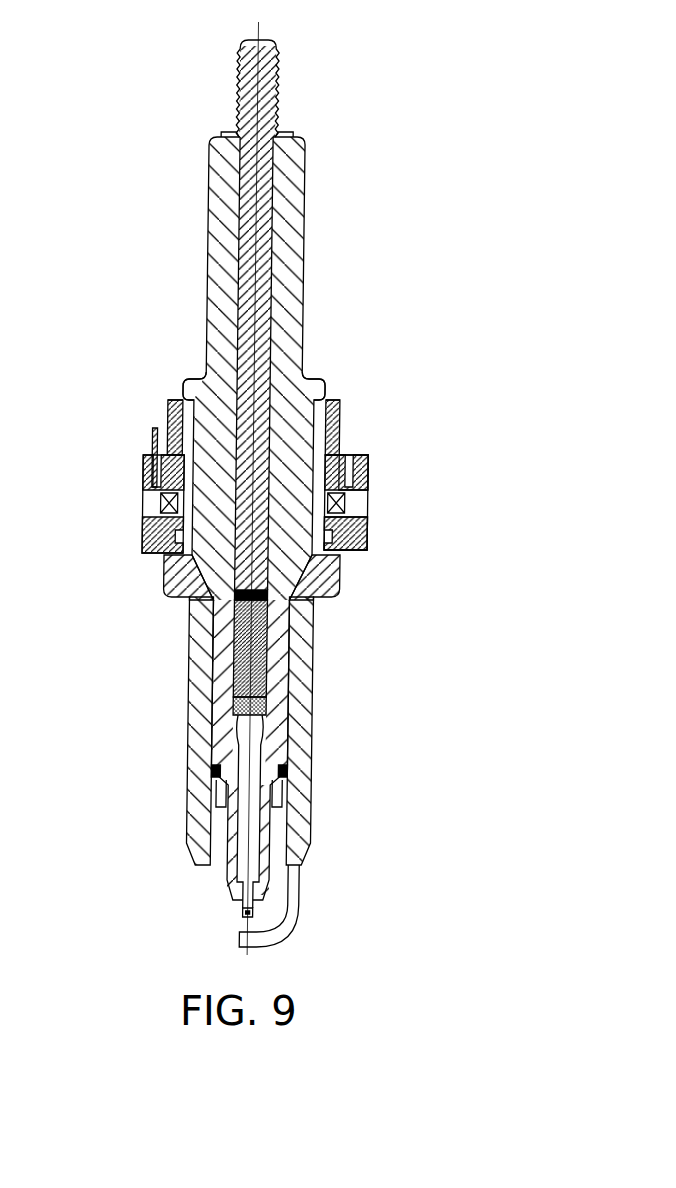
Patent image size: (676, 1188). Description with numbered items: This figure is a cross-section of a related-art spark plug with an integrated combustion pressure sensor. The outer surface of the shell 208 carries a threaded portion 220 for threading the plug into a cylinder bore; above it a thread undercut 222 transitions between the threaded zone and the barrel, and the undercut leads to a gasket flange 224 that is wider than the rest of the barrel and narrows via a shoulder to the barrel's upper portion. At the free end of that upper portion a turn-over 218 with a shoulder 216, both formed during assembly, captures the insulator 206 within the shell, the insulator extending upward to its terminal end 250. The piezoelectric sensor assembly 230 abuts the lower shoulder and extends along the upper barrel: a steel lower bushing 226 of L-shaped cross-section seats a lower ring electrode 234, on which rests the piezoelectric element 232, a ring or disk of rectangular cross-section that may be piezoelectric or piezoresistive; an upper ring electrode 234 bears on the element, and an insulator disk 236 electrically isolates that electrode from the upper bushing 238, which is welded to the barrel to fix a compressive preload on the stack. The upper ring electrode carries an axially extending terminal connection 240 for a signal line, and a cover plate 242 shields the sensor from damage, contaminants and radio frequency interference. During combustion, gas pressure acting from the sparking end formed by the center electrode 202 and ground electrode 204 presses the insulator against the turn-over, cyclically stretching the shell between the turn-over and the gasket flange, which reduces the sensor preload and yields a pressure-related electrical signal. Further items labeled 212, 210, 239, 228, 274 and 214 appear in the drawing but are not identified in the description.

The terminal stud 212 is at (277, 78).
The terminal end 250 is at (222, 130).
The insulator 210 is at (268, 192).
The turn-over 218 is at (198, 377).
The shoulder 216 is at (303, 383).
The gap 239 is at (172, 393).
The insulator disk 236 is at (170, 410).
The upper bushing 238 is at (343, 420).
The terminal connection 240 is at (153, 445).
The ring electrode 234 is at (145, 485).
The piezoelectric element 232 is at (140, 483).
The cover plate 242 is at (147, 542).
The piezoelectric sensor assembly 230 is at (367, 473).
The sensor element 228 is at (367, 505).
The lower bushing 226 is at (365, 530).
The flange seat 274 is at (178, 600).
The gasket flange 224 is at (340, 573).
The thread undercut 222 is at (307, 602).
The threaded portion 220 is at (187, 778).
The insulator 206 is at (278, 683).
The shell 208 is at (293, 742).
The packing 214 is at (277, 773).
The center electrode 202 is at (243, 912).
The ground electrode 204 is at (287, 922).